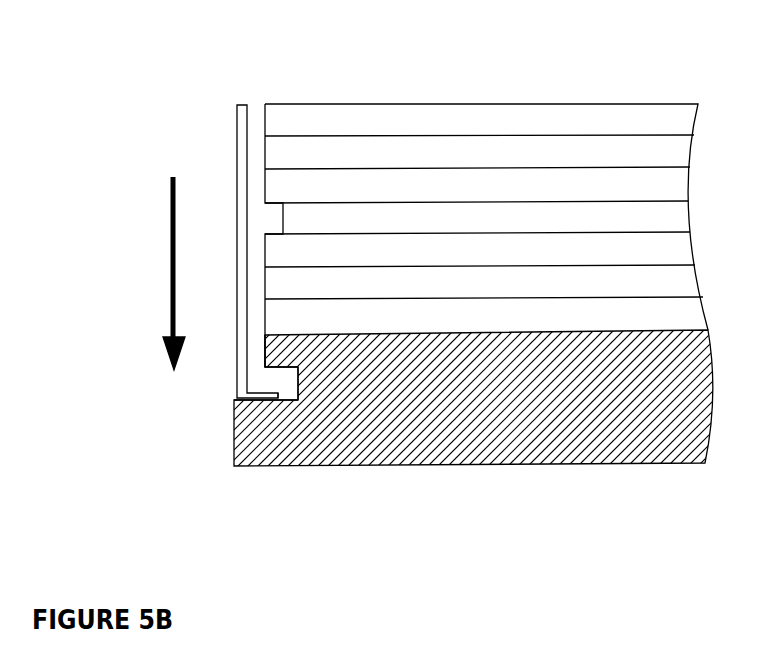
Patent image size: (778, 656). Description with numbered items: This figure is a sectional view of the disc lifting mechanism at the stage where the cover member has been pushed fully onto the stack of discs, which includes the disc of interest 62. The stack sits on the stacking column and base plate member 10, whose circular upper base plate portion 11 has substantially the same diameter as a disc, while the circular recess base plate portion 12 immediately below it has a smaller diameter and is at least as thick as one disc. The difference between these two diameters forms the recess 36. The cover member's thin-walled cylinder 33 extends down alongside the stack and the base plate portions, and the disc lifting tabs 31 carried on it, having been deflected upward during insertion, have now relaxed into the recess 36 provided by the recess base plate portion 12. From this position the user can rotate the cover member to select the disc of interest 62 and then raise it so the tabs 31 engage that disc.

The stacking column and base plate member 10 is at (595, 333).
The upper base plate portion 11 is at (283, 342).
The recess base plate portion 12 is at (321, 380).
The disc lifting tabs 31 is at (262, 417).
The thin-walled cylinder 33 is at (226, 122).
The recess 36 is at (292, 394).
The disc of interest 62 is at (383, 200).